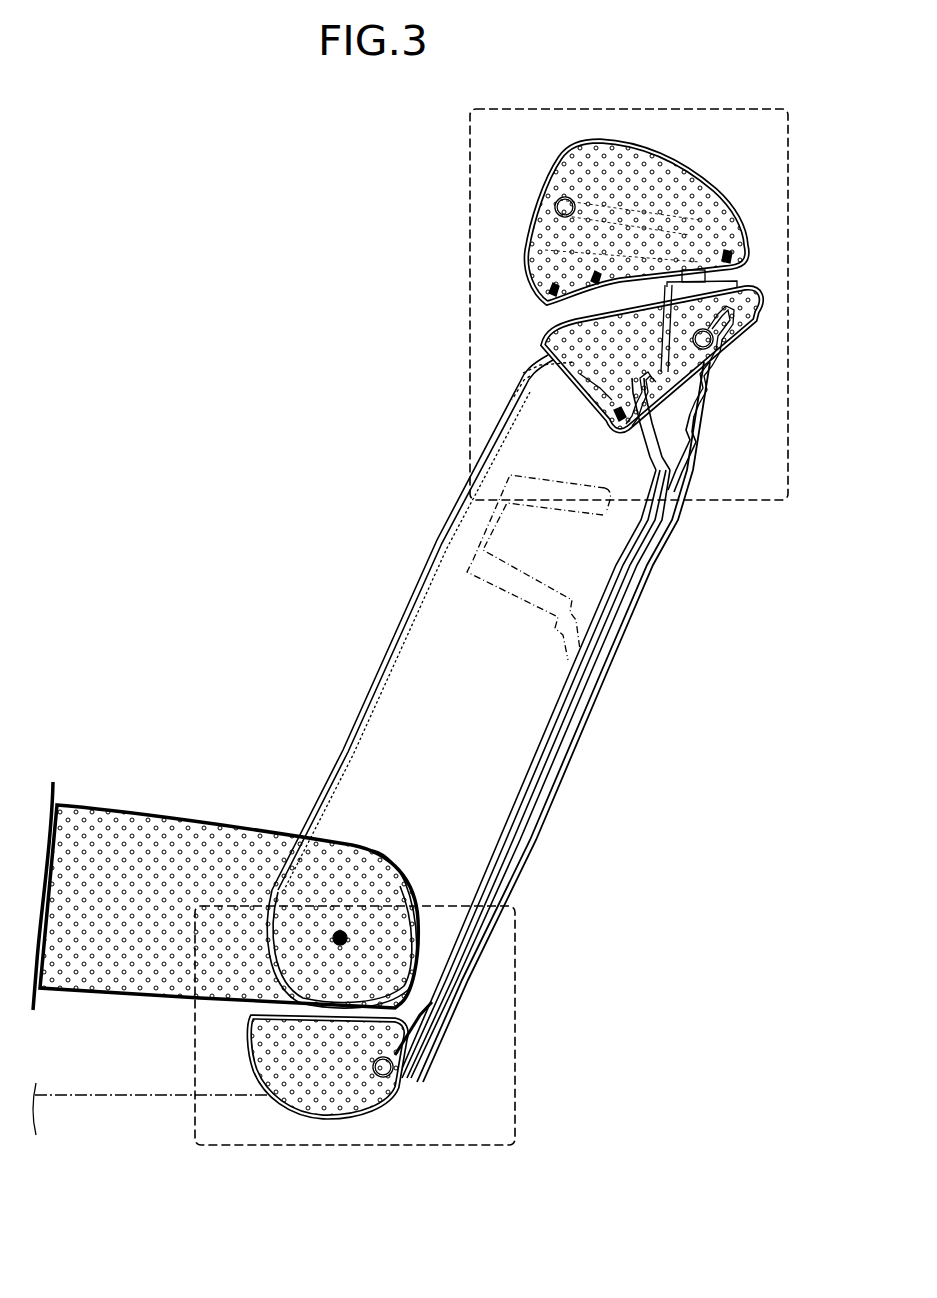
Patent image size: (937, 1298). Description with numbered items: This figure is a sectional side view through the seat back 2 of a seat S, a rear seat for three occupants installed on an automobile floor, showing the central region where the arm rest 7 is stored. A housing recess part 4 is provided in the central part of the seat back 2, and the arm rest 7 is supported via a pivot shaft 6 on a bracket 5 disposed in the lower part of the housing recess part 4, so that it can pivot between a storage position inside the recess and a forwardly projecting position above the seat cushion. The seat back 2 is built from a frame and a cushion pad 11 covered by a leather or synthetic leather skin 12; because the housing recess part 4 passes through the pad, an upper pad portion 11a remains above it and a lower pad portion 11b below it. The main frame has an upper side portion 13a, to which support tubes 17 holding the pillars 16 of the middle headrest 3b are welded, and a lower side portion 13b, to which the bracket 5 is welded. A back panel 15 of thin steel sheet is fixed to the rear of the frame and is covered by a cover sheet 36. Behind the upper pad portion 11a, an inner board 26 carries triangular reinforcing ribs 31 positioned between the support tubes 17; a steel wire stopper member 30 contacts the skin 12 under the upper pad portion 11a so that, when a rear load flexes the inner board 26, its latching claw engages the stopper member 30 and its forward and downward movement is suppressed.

The seat S is at (338, 456).
The arm rest 7 is at (466, 151).
The bracket 5 is at (516, 914).
The headrest 3b is at (660, 152).
The pillar 16 is at (722, 270).
The seat back 2 is at (562, 343).
The upper side portion 13a is at (716, 352).
The cushion pad 11 is at (575, 364).
The upper pad portion 11a is at (586, 378).
The skin 12 is at (606, 412).
The stopper member 30 is at (628, 422).
The reinforcing rib 31 is at (672, 458).
The support tube 17 is at (698, 442).
The housing recess part 4 is at (415, 713).
The inner board 26 is at (572, 671).
The cover sheet 36 is at (608, 668).
The back panel 15 is at (568, 726).
The pivot shaft 6 is at (343, 933).
The lower pad portion 11b is at (268, 1059).
The lower side portion 13b is at (364, 1086).